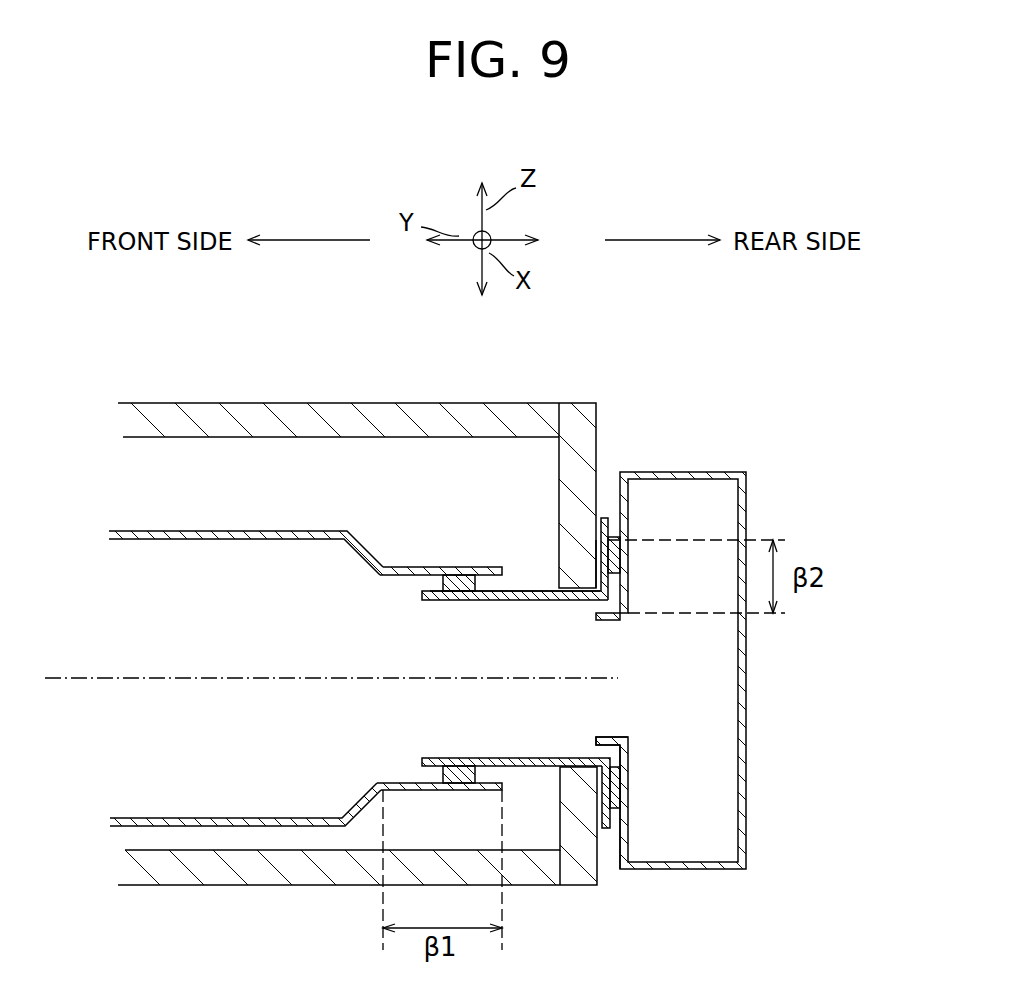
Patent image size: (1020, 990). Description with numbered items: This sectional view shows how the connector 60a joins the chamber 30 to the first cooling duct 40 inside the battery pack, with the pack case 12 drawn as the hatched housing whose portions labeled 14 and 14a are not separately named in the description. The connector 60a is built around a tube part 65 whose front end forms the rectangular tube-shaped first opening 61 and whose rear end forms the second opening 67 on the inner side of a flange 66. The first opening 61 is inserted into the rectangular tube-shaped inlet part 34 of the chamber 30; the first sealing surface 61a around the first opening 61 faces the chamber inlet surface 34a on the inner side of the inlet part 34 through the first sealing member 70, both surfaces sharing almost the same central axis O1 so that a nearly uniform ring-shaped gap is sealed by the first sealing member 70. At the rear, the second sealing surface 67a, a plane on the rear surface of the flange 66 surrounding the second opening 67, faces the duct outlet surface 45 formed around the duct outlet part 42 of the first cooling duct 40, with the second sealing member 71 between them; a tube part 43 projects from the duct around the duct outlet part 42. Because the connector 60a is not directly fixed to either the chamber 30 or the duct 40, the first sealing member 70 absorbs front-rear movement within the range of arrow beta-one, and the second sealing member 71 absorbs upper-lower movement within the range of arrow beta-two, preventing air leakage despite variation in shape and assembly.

The pack case 12 is at (384, 606).
The housing wall 14 is at (438, 420).
The housing end wall 14a is at (597, 447).
The chamber 30 is at (324, 665).
The inlet part 34 is at (425, 567).
The chamber inlet surface 34a is at (492, 782).
The first cooling duct 40 is at (700, 664).
The duct outlet part 42 is at (622, 737).
The tube part 43 is at (600, 737).
The duct outlet surface 45 is at (599, 580).
The connector 60a is at (533, 588).
The first opening 61 is at (432, 601).
The first sealing surface 61a is at (432, 766).
The tube part 65 is at (517, 601).
The flange 66 is at (615, 537).
The second opening 67 is at (604, 601).
The second sealing surface 67a is at (610, 818).
The first sealing member 70 is at (443, 584).
The second sealing member 71 is at (620, 790).
The central axis O1 is at (176, 680).